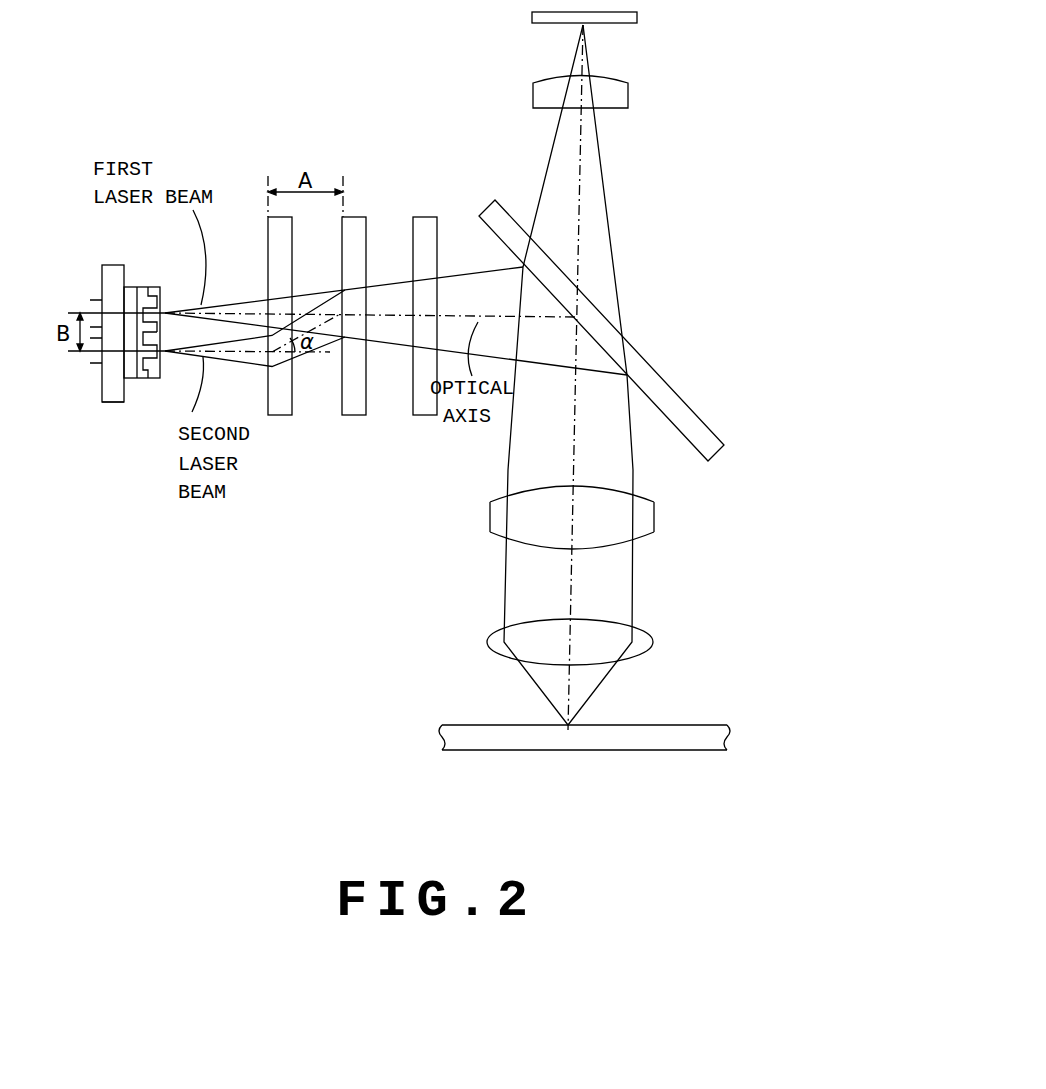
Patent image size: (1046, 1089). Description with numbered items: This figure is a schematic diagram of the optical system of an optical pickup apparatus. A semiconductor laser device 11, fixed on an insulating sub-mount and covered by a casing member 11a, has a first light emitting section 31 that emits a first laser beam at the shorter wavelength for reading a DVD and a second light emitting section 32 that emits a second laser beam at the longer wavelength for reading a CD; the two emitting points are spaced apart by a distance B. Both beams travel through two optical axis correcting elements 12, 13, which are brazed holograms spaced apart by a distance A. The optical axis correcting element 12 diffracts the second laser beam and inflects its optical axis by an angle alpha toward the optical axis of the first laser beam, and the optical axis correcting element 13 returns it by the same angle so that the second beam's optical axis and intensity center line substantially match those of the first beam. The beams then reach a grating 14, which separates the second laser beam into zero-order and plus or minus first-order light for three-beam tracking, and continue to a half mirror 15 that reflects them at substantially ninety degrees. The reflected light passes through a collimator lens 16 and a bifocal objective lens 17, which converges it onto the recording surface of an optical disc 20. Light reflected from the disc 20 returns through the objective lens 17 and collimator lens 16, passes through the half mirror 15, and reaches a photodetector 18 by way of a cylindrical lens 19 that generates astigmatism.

The semiconductor laser device 11 is at (97, 274).
The casing member 11a is at (115, 403).
The first light emitting section 31 is at (153, 292).
The second light emitting section 32 is at (150, 378).
The optical axis correcting element 12 is at (268, 228).
The optical axis correcting element 13 is at (355, 217).
The grating 14 is at (428, 217).
The half mirror 15 is at (700, 414).
The collimator lens 16 is at (654, 518).
The objective lens 17 is at (653, 640).
The photodetector 18 is at (637, 17).
The cylindrical lens 19 is at (628, 95).
The optical disc 20 is at (700, 725).